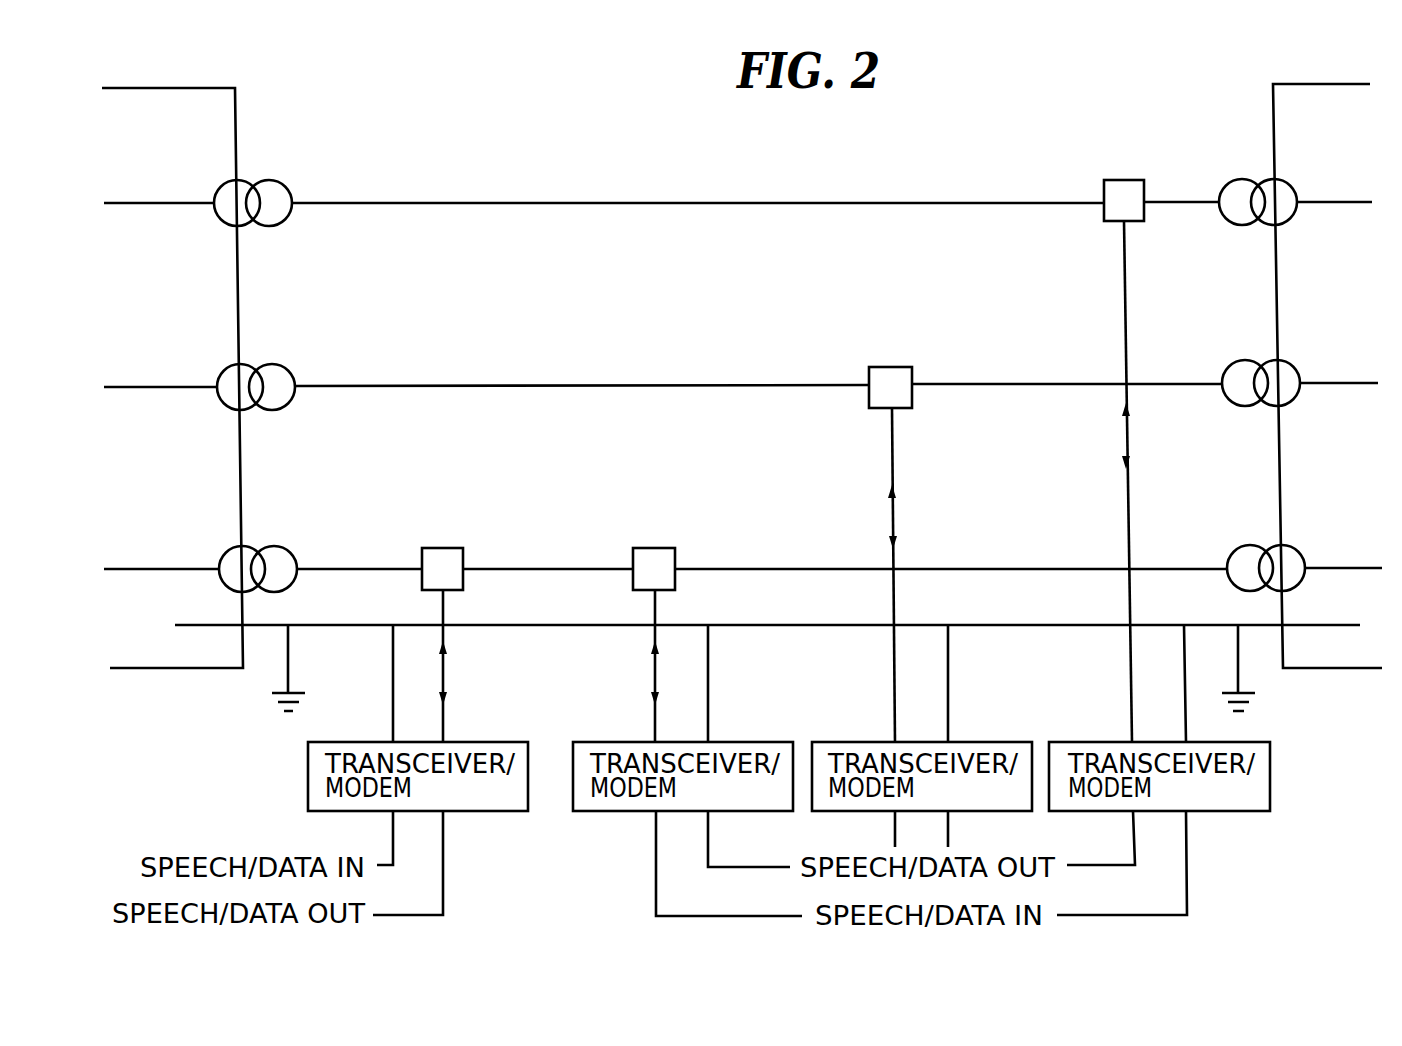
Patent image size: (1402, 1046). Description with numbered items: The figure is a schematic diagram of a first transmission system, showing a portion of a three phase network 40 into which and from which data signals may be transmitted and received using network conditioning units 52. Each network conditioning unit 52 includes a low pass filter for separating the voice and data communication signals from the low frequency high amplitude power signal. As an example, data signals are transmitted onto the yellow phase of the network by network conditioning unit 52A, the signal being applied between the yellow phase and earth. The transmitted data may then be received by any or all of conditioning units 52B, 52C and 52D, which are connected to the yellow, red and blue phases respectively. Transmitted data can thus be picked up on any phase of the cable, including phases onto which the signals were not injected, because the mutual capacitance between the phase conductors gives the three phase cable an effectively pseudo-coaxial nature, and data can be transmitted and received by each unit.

The network 40 is at (320, 68).
The network conditioning unit 52 is at (776, 355).
The network conditioning unit 52A is at (442, 569).
The conditioning unit 52B is at (654, 569).
The conditioning unit 52C is at (890, 387).
The conditioning unit 52D is at (1124, 200).